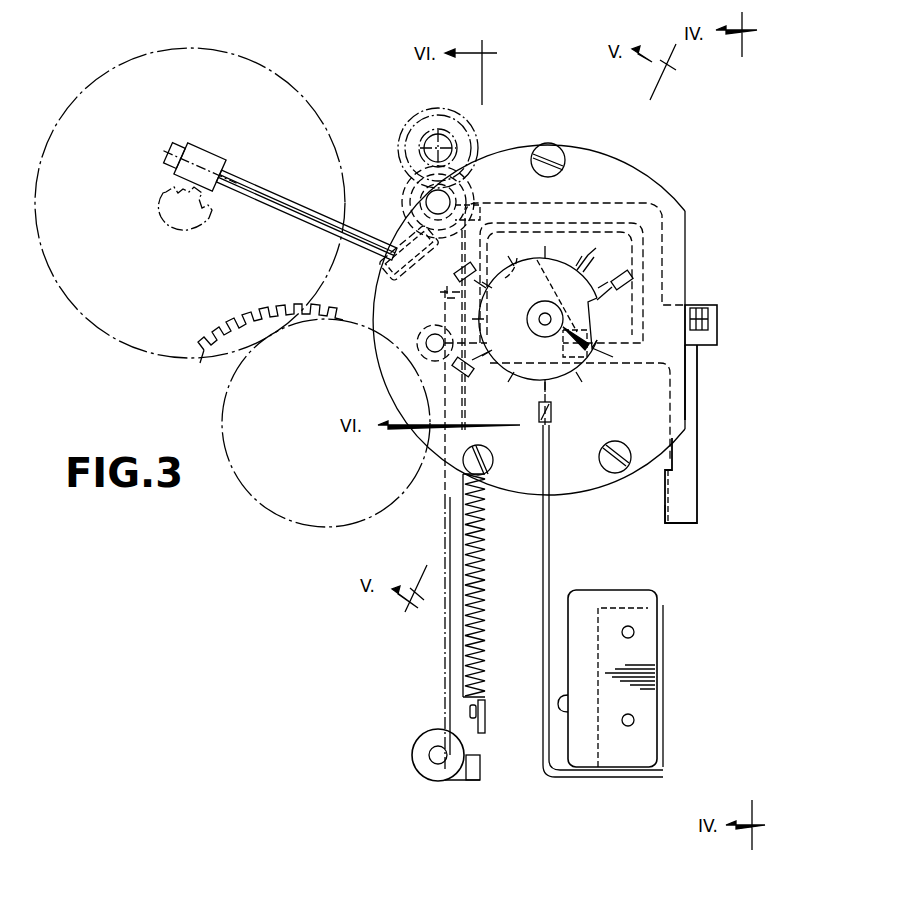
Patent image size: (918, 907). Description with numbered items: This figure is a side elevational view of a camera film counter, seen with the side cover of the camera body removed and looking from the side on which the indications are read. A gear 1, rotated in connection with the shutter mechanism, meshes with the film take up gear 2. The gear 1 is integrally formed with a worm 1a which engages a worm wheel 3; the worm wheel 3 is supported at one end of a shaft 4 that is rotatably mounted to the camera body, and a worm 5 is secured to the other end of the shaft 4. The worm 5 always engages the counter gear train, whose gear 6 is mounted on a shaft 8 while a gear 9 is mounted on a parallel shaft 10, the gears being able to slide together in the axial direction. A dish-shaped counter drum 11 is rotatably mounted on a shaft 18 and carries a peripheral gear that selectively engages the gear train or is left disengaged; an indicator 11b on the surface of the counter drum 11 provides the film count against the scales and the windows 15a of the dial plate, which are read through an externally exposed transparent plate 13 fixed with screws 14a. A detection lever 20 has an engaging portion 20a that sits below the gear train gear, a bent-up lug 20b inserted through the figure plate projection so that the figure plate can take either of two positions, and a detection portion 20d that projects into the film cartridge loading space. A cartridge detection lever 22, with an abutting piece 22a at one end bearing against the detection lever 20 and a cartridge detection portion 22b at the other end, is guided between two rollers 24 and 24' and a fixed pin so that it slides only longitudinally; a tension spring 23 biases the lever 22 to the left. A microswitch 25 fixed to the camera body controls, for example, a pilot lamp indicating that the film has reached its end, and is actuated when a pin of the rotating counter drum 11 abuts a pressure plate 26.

The gear 1 is at (304, 91).
The worm 1a is at (204, 210).
The film take up gear 2 is at (236, 423).
The worm wheel 3 is at (216, 157).
The shaft 4 is at (293, 200).
The worm 5 is at (382, 265).
The gear 6 is at (402, 180).
The shaft 8 is at (415, 204).
The gear 9 is at (448, 118).
The shaft 10 is at (424, 124).
The counter drum 11 is at (583, 256).
The indicator 11b is at (592, 321).
The transparent plate 13 is at (392, 380).
The screws 14a is at (549, 152).
The windows 15a is at (552, 414).
The shaft 18 is at (538, 327).
The detection lever 20 is at (698, 470).
The engaging portion 20a is at (468, 188).
The bent-up lug 20b is at (714, 306).
The detection portion 20d is at (666, 520).
The cartridge detection lever 22 is at (445, 658).
The abutting piece 22a is at (444, 292).
The cartridge detection portion 22b is at (480, 776).
The tension spring 23 is at (486, 624).
The roller 24 is at (421, 755).
The roller 24' is at (401, 343).
The microswitch 25 is at (650, 650).
The pressure plate 26 is at (553, 566).